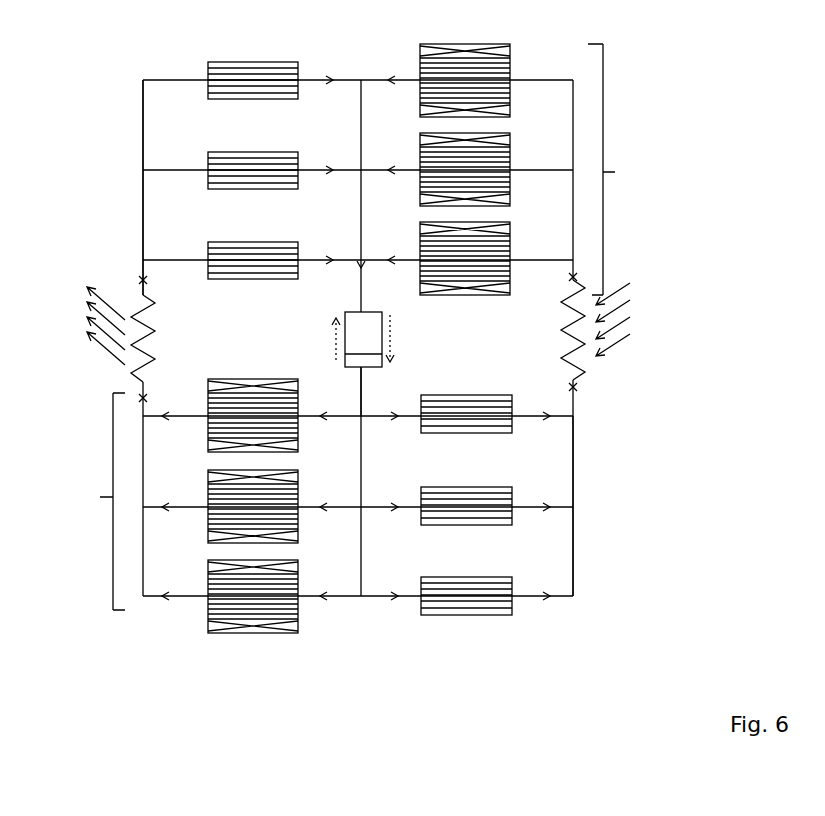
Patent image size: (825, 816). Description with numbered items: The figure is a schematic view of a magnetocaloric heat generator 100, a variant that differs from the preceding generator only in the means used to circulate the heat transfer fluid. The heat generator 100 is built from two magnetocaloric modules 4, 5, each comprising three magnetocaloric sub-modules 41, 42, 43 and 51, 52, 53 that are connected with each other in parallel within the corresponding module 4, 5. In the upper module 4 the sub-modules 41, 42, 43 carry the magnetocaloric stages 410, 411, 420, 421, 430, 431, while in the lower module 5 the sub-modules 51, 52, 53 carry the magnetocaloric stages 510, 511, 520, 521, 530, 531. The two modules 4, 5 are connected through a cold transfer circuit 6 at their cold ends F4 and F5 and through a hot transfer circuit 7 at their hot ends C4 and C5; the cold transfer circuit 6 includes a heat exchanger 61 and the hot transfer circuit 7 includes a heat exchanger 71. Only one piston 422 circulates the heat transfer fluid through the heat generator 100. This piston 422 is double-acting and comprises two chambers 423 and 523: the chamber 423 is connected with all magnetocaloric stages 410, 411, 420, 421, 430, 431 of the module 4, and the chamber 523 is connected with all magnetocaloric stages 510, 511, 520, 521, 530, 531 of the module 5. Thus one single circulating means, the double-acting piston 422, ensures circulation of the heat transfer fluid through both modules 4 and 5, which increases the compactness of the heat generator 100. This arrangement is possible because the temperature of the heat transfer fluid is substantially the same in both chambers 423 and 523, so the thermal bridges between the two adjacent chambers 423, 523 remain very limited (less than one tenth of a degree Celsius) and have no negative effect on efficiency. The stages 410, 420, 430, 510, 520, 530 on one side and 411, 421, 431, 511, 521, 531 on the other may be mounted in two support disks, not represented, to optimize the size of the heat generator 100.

The heat generator 100 is at (727, 176).
The magnetocaloric module 4 is at (611, 169).
The magnetocaloric sub-module 41 is at (160, 73).
The magnetocaloric sub-module 42 is at (160, 163).
The magnetocaloric sub-module 43 is at (160, 253).
The magnetocaloric stage 410 is at (250, 72).
The magnetocaloric stage 420 is at (252, 162).
The magnetocaloric stage 430 is at (252, 252).
The magnetocaloric stage 411 is at (443, 70).
The magnetocaloric stage 421 is at (493, 165).
The magnetocaloric stage 431 is at (497, 255).
The double-acting piston 422 is at (339, 297).
The chamber 423 is at (379, 332).
The chamber 523 is at (335, 365).
The magnetocaloric module 5 is at (105, 501).
The magnetocaloric sub-module 51 is at (542, 438).
The magnetocaloric sub-module 52 is at (542, 528).
The magnetocaloric sub-module 53 is at (542, 618).
The magnetocaloric stage 510 is at (237, 414).
The magnetocaloric stage 520 is at (237, 505).
The magnetocaloric stage 530 is at (237, 594).
The magnetocaloric stage 511 is at (455, 408).
The magnetocaloric stage 521 is at (455, 500).
The magnetocaloric stage 531 is at (455, 590).
The cold transfer circuit 6 is at (644, 294).
The heat exchanger 61 is at (580, 382).
The hot transfer circuit 7 is at (48, 288).
The heat exchanger 71 is at (140, 294).
The hot end C4 is at (143, 280).
The hot end C5 is at (140, 398).
The cold end F4 is at (578, 277).
The cold end F5 is at (575, 388).